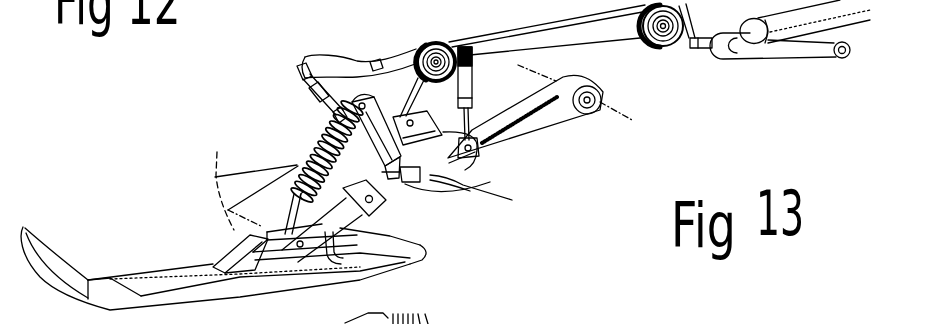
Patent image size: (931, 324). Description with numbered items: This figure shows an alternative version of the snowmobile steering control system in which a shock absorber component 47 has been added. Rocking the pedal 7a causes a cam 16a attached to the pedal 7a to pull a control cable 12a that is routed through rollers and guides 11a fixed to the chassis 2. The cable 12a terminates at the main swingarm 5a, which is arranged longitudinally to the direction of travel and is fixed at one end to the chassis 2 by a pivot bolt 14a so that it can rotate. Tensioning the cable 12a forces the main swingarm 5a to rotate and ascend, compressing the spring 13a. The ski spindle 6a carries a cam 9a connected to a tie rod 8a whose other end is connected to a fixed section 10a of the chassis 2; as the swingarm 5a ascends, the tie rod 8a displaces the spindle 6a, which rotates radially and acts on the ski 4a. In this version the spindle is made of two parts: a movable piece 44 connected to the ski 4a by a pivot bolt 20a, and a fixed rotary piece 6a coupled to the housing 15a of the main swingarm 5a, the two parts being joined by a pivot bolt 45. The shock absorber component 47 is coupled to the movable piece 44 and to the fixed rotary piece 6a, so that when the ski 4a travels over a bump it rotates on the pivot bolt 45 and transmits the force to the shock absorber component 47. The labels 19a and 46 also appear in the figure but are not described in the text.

The chassis 2 is at (372, 66).
The ski 4a is at (182, 283).
The main swingarm 5a is at (534, 140).
The ski spindle 6a is at (484, 194).
The pedal 7a is at (789, 48).
The tie rod 8a is at (310, 109).
The cam 9a is at (413, 183).
The fixed section 10a is at (297, 71).
The rollers and guides 11a is at (661, 36).
The control cable 12a is at (537, 25).
The spring 13a is at (494, 103).
The pivot bolt 14a is at (583, 109).
The housing 15a is at (441, 151).
The cam 16a is at (704, 48).
The steering column 19a is at (777, 18).
The pivot bolt 20a is at (343, 265).
The movable piece 44 is at (337, 217).
The pivot bolt 45 is at (378, 203).
The steering angle 46 is at (243, 191).
The shock absorber component 47 is at (311, 151).